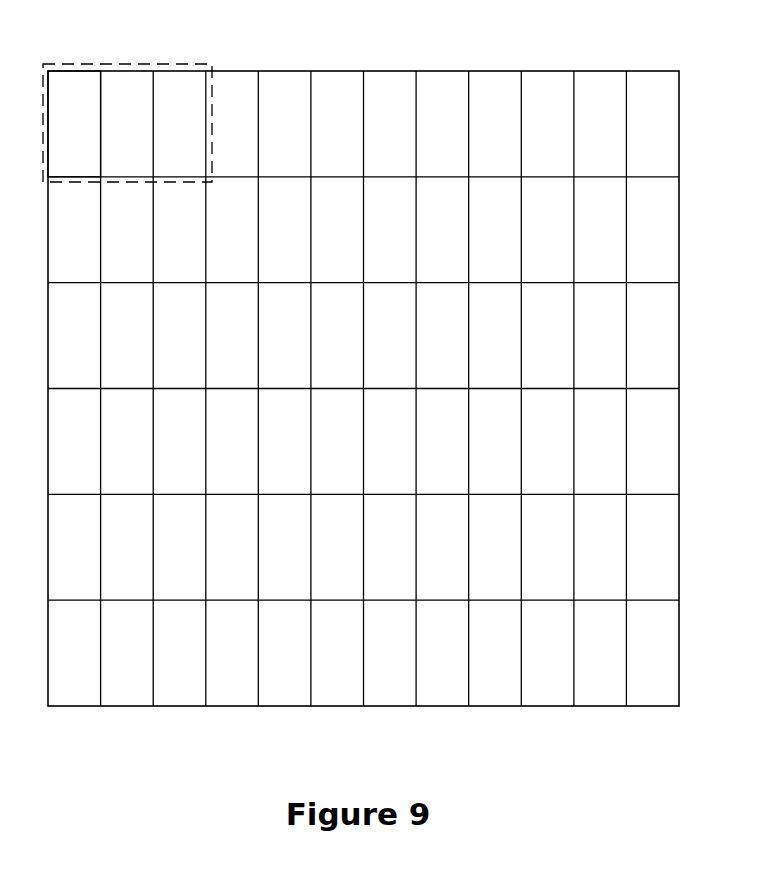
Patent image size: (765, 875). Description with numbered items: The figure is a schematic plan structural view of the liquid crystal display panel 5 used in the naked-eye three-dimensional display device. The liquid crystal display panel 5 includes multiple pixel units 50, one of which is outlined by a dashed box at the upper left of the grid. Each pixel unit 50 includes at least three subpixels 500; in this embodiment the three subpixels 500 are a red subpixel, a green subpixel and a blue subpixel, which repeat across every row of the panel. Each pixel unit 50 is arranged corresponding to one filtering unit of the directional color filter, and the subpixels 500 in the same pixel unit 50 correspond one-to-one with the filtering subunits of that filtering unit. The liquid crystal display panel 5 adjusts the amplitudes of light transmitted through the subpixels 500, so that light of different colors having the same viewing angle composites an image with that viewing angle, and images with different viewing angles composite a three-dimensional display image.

The liquid crystal display panel 5 is at (245, 72).
The pixel unit 50 is at (160, 64).
The subpixel 500 is at (63, 80).